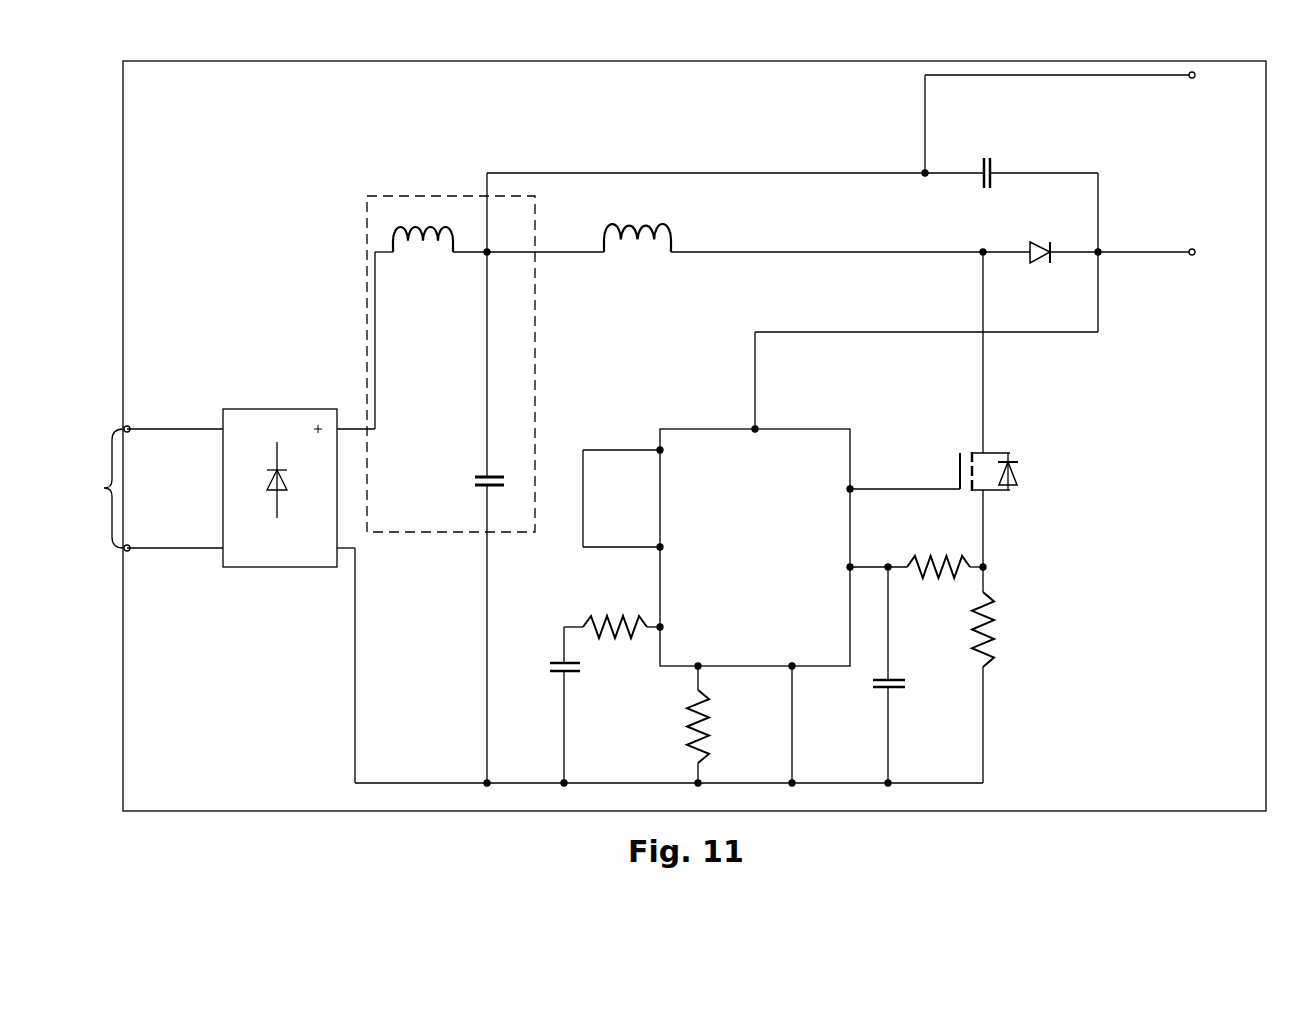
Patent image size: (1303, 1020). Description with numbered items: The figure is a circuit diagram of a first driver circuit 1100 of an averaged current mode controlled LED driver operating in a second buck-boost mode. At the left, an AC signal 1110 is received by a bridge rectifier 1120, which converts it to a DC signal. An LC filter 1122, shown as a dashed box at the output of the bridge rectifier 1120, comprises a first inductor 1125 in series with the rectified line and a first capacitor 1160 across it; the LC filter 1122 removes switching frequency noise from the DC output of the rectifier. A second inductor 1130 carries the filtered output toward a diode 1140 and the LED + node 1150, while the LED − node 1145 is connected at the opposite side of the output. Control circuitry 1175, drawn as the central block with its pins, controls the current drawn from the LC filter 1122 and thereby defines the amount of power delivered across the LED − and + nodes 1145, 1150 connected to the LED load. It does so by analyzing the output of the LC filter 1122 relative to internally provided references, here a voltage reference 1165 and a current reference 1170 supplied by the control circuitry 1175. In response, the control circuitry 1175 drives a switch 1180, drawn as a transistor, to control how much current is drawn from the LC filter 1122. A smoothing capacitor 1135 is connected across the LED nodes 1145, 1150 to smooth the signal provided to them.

The first driver circuit 1100 is at (616, 88).
The AC signal 1110 is at (139, 488).
The bridge rectifier 1120 is at (223, 409).
The LC filter 1122 is at (367, 268).
The first inductor 1125 is at (416, 228).
The inductor 1130 is at (671, 246).
The smoothing capacitor 1135 is at (990, 173).
The diode 1140 is at (1022, 246).
The LED − node 1145 is at (1195, 77).
The LED + node 1150 is at (1195, 254).
The first capacitor 1160 is at (475, 481).
The voltage reference (VREF) 1165 is at (660, 449).
The current reference (IREF) 1170 is at (660, 549).
The control circuitry 1175 is at (674, 606).
The switch 1180 is at (1015, 455).